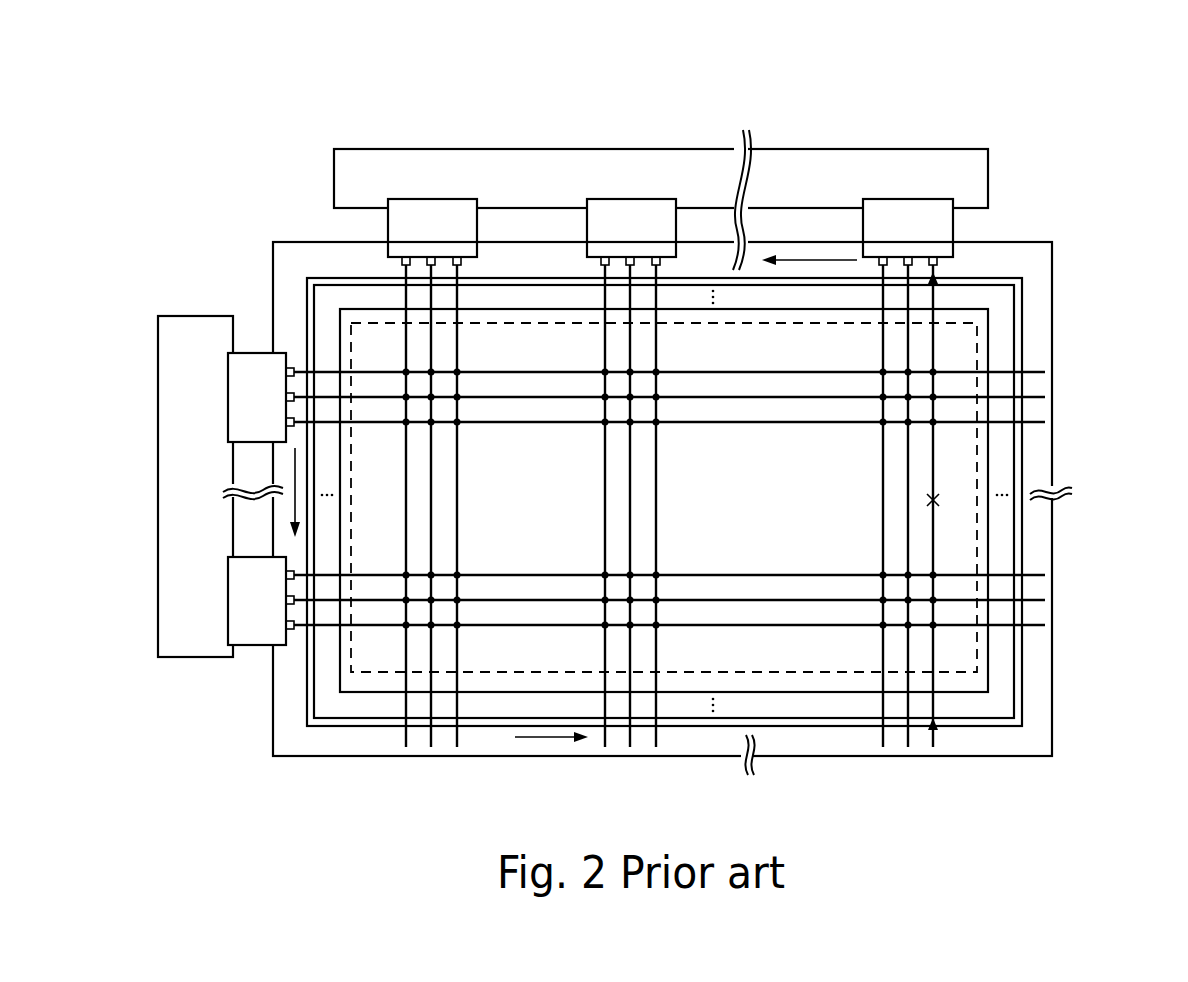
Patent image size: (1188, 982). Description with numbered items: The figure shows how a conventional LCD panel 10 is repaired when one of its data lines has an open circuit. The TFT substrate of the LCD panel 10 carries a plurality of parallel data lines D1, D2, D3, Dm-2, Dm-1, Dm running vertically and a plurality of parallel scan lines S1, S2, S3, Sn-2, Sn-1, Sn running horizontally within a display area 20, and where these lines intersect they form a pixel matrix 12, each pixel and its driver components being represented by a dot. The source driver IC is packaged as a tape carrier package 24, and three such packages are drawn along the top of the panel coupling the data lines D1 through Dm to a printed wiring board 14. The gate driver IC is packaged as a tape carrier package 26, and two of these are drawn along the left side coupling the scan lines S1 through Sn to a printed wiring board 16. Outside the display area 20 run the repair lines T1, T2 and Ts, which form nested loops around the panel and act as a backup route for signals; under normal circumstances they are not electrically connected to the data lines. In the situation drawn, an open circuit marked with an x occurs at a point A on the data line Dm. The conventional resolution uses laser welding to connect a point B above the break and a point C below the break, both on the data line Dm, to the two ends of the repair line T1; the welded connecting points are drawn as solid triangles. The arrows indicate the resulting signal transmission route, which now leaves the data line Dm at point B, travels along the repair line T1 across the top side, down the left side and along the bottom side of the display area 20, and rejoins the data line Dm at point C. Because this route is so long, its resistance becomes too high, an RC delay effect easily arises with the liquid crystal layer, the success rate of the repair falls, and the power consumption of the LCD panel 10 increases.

The LCD panel 10 is at (699, 448).
The pixel matrix 12 is at (656, 372).
The printed wiring board 14 is at (883, 185).
The printed wiring board 16 is at (173, 497).
The display area 20 is at (978, 345).
The tape carrier package 24 is at (415, 242).
The tape carrier package 26 is at (240, 414).
The repair line T1 is at (307, 326).
The repair line T2 is at (307, 280).
The repair line Ts is at (363, 309).
The scan line S1 is at (1033, 372).
The scan line S2 is at (1033, 397).
The scan line S3 is at (1033, 422).
The scan line Sn-2 is at (1033, 575).
The scan line Sn-1 is at (1033, 600).
The scan line Sn is at (1033, 625).
The data line D1 is at (406, 747).
The data line D2 is at (431, 747).
The data line D3 is at (457, 747).
The data line Dm-2 is at (883, 747).
The data line Dm-1 is at (908, 747).
The data line Dm is at (933, 747).
The point A is at (946, 499).
The point B is at (940, 277).
The point C is at (940, 728).